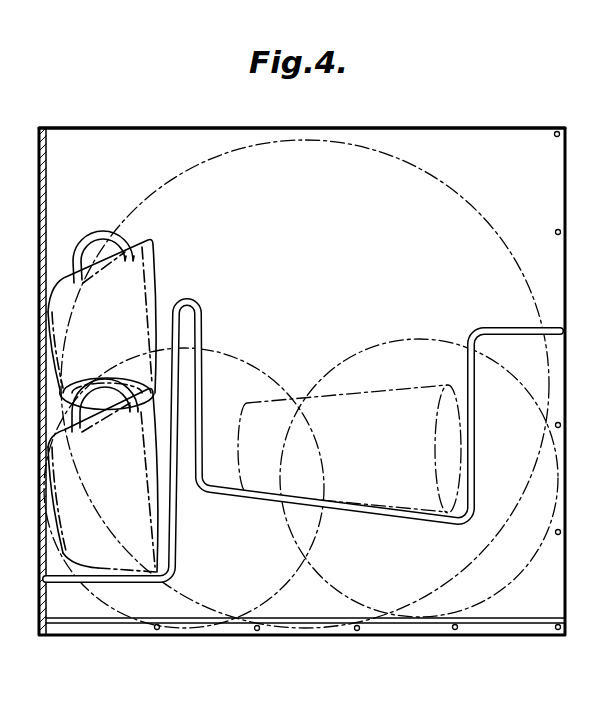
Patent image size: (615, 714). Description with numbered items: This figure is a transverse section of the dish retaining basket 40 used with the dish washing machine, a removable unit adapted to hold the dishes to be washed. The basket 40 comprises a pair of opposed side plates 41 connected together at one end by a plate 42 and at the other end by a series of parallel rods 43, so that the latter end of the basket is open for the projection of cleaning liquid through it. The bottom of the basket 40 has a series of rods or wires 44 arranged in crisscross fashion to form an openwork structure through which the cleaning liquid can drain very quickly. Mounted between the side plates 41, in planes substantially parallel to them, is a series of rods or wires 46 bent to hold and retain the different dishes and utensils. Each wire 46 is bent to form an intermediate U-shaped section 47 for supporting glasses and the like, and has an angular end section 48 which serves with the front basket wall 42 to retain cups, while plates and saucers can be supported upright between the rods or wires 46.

The basket 40 is at (490, 124).
The side plates 41 is at (94, 133).
The plate 42 is at (38, 164).
The parallel rods 43 is at (556, 230).
The rods or wires 44 is at (254, 631).
The rods or wires 46 is at (194, 293).
The intermediate U-shaped section 47 is at (203, 402).
The angular end section 48 is at (179, 555).